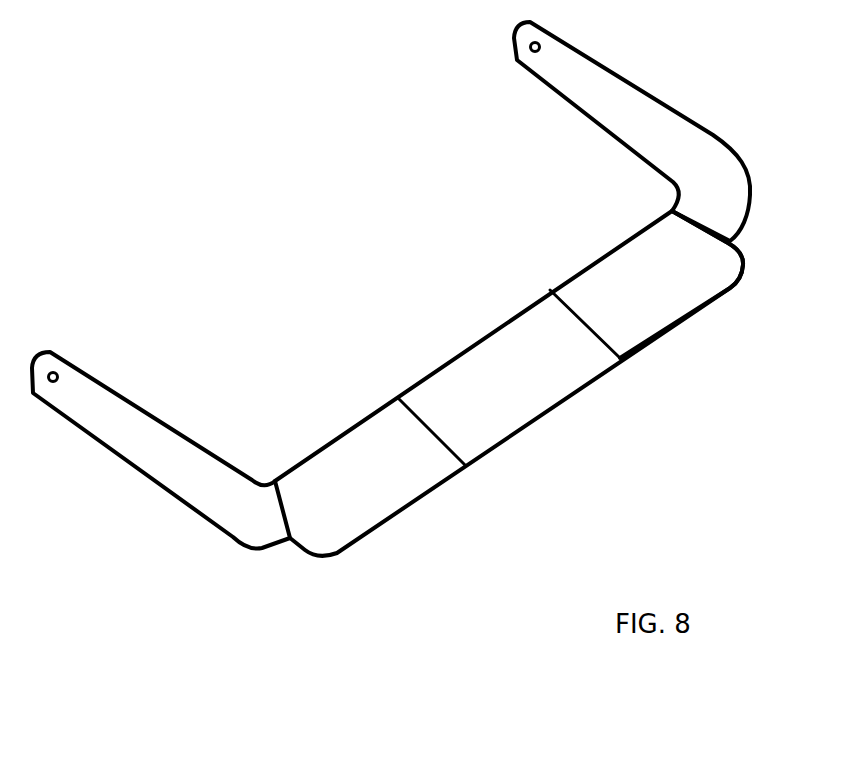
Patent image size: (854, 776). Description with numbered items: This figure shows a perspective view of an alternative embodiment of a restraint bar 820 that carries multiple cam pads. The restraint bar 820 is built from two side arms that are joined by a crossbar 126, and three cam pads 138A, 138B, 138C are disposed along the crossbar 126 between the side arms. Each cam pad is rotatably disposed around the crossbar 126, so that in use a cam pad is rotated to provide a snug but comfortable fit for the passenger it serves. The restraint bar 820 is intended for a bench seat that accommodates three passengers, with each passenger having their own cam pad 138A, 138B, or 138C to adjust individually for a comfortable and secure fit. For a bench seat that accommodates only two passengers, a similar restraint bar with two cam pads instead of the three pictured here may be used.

The restraint bar 820 is at (180, 197).
The crossbar 126 is at (528, 383).
The cam pad 138A is at (368, 502).
The cam pad 138B is at (502, 412).
The cam pad 138C is at (663, 295).